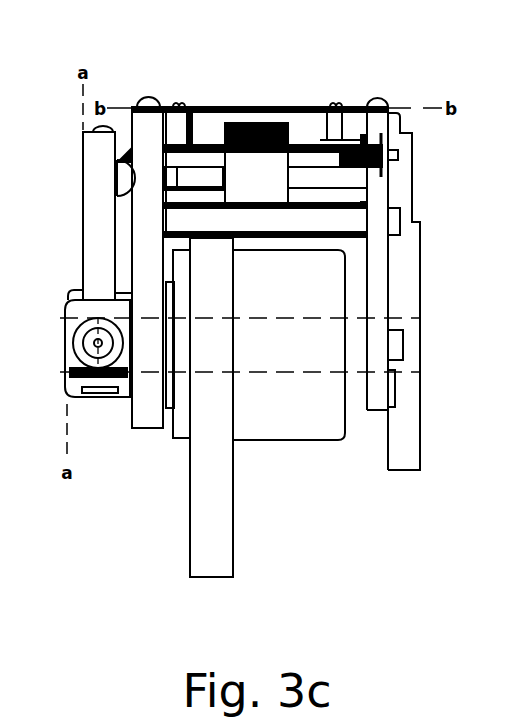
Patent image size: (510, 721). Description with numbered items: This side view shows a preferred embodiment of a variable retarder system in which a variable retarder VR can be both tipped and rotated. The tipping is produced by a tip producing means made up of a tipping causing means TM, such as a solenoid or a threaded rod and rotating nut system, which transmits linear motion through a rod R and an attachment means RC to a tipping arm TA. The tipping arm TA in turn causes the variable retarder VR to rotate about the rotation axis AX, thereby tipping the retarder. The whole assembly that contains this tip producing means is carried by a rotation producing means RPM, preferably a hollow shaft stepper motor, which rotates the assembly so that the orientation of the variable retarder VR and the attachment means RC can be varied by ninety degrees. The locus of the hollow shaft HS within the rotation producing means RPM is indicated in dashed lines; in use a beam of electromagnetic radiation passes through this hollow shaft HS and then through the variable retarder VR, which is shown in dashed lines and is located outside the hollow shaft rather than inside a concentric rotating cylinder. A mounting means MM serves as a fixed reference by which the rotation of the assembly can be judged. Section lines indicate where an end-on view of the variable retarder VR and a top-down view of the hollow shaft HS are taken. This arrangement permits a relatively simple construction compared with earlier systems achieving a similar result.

The attachment means RC is at (122, 152).
The tipping arm TA is at (87, 211).
The rotation axis AX is at (92, 338).
The variable retarder VR is at (82, 370).
The hollow shaft HS is at (263, 320).
The tipping causing means TM is at (243, 188).
The rod R is at (194, 186).
The rotation producing means RPM is at (264, 428).
The mounting means MM is at (194, 500).